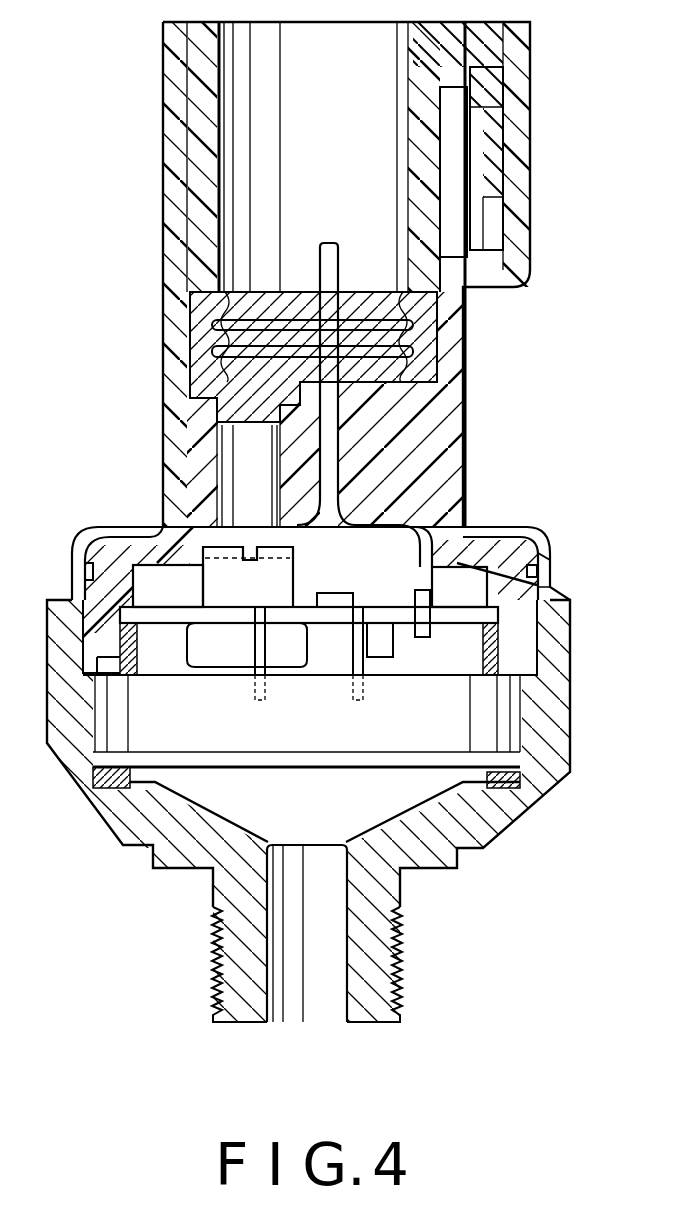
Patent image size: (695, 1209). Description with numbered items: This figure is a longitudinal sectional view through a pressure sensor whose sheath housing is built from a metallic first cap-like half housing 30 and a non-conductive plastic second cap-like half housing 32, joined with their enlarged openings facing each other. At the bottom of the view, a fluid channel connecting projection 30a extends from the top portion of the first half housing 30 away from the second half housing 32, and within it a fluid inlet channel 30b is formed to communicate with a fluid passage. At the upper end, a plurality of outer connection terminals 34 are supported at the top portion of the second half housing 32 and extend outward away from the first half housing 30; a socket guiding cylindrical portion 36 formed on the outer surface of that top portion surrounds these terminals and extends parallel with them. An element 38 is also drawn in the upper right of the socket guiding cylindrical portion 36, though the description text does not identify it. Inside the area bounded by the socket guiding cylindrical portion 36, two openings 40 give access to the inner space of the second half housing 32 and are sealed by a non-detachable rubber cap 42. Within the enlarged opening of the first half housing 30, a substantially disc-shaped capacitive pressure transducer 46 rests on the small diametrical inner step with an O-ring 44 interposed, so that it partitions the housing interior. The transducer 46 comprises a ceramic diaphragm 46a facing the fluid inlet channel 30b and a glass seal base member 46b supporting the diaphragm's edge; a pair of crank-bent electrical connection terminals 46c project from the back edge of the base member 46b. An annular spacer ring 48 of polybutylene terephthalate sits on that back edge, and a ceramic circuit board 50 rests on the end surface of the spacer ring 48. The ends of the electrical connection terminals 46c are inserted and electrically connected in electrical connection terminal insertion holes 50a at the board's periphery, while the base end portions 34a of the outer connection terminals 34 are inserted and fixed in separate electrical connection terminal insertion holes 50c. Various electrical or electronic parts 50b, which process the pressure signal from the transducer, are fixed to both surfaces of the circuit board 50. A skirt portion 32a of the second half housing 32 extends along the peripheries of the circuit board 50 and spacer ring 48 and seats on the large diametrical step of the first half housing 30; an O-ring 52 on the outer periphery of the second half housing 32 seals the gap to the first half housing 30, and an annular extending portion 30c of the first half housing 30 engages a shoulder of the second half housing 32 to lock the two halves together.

The first cap-like half housing 30 is at (445, 867).
The fluid channel connecting projection 30a is at (397, 887).
The fluid inlet channel 30b is at (323, 1003).
The annular extending portion 30c is at (530, 540).
The second cap-like half housing 32 is at (490, 548).
The skirt portion 32a is at (527, 660).
The outer connection terminals 34 is at (325, 243).
The base end portions 34a is at (420, 637).
The socket guiding cylindrical portion 36 is at (163, 212).
The contact 38 is at (530, 250).
The openings 40 is at (255, 470).
The rubber cap 42 is at (257, 390).
The O-ring 44 is at (540, 793).
The capacitive pressure transducer 46 is at (455, 733).
The diaphragm 46a is at (298, 762).
The base member 46b is at (187, 743).
The electrical connection terminals 46c is at (353, 680).
The spacer ring 48 is at (500, 640).
The circuit board 50 is at (135, 577).
The electrical connection terminal insertion holes 50a is at (253, 615).
The electrical or electronic parts 50b is at (167, 615).
The electrical connection terminal insertion holes 50c is at (545, 575).
The O-ring 52 is at (548, 562).